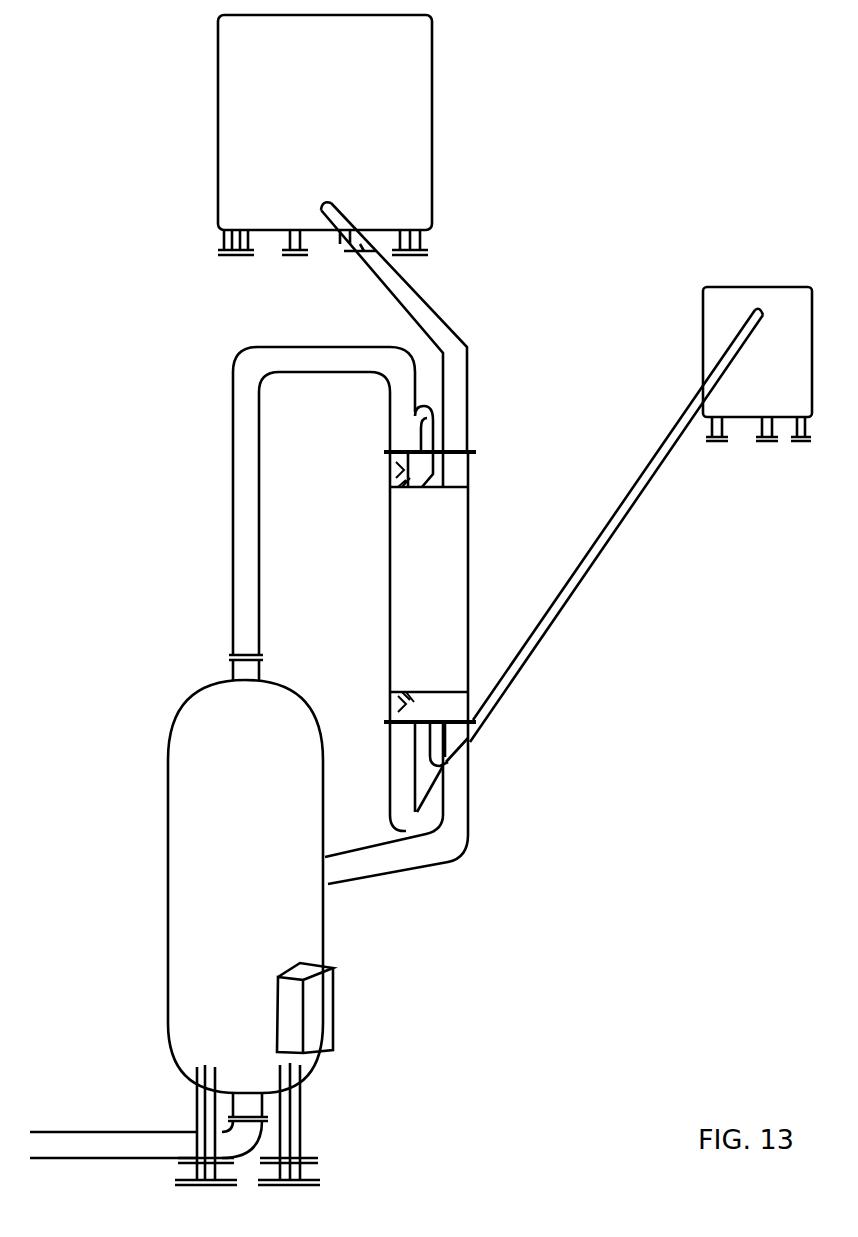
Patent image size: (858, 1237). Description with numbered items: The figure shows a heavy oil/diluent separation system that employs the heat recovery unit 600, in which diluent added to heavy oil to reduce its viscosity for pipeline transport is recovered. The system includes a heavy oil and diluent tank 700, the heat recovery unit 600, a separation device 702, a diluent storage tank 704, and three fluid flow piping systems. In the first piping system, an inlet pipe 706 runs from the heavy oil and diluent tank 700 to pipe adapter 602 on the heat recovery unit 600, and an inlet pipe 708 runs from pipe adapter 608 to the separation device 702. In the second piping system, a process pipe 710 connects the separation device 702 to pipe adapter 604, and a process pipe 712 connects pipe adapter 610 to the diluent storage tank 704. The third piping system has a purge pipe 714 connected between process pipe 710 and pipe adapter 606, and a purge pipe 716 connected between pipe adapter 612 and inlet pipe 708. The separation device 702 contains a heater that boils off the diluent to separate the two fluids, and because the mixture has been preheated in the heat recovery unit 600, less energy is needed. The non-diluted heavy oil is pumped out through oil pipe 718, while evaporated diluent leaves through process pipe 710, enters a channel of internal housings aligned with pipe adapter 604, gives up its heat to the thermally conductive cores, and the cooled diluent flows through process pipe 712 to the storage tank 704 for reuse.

The heavy oil and diluent tank 700 is at (325, 135).
The diluent storage tank 704 is at (757, 364).
The inlet pipe 706 is at (462, 343).
The process pipe 710 is at (236, 472).
The process pipe 712 is at (615, 523).
The heat recovery unit 600 is at (429, 587).
The pipe adapter 602 is at (460, 475).
The pipe adapter 604 is at (392, 470).
The pipe adapter 606 is at (398, 488).
The purge pipe 714 is at (438, 432).
The pipe adapter 608 is at (472, 706).
The pipe adapter 610 is at (402, 704).
The pipe adapter 612 is at (400, 688).
The purge pipe 716 is at (452, 766).
The inlet pipe 708 is at (450, 846).
The separation device 702 is at (250, 932).
The oil pipe 718 is at (94, 1132).